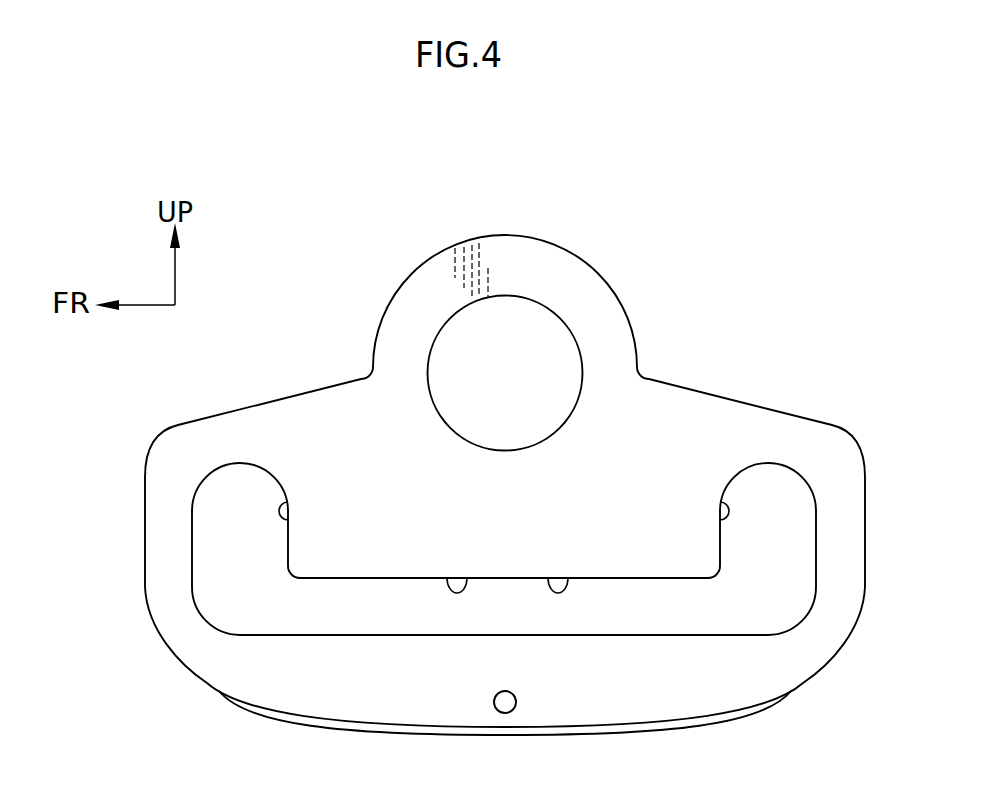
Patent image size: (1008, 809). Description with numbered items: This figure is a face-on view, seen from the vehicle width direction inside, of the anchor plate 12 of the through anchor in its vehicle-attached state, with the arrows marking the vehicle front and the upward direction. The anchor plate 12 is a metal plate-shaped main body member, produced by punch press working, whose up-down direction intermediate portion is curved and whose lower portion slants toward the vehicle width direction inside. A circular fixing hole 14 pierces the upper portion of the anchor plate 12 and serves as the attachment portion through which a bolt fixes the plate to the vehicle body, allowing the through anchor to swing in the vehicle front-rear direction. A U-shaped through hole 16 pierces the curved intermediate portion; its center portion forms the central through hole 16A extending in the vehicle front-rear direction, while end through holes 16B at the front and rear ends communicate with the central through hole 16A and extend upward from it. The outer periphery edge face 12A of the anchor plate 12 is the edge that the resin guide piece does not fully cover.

The anchor plate 12 is at (321, 328).
The outer periphery edge face 12A is at (145, 500).
The fixing hole 14 is at (556, 314).
The through hole 16 is at (465, 578).
The central through hole 16A is at (567, 578).
The end through holes 16B is at (374, 512).